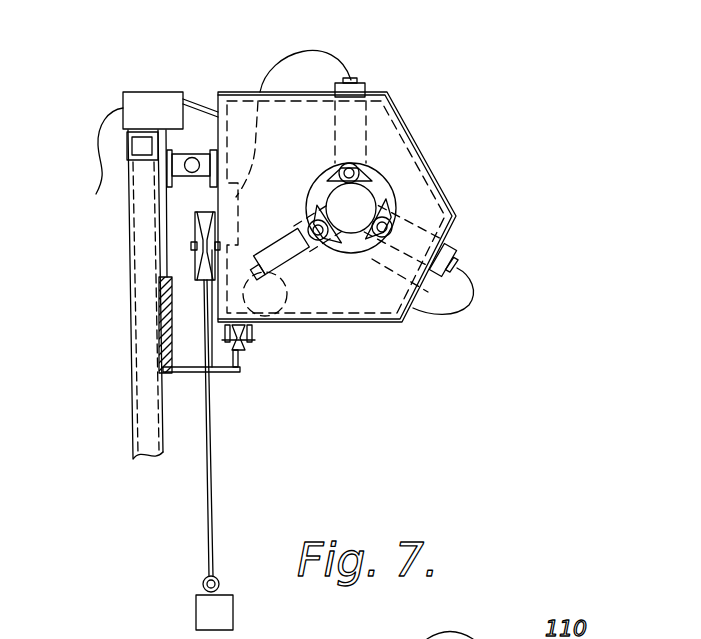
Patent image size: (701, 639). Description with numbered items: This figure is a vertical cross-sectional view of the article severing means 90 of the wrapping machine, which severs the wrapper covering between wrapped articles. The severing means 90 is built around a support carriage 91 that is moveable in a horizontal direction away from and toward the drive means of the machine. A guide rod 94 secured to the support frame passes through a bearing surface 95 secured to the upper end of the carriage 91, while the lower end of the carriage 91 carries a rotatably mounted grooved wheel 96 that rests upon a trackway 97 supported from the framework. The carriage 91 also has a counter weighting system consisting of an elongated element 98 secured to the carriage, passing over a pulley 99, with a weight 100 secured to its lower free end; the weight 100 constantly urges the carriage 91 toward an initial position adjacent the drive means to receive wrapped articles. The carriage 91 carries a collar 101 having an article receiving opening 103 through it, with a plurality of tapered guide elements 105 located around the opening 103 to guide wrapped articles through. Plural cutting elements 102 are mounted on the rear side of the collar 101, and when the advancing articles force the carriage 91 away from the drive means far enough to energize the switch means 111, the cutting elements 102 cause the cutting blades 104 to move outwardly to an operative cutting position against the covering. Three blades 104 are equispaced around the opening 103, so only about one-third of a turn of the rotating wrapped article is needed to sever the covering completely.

The article severing means 90 is at (398, 175).
The support carriage 91 is at (240, 190).
The guide rod 94 is at (184, 169).
The bearing surface 95 is at (198, 154).
The grooved wheel 96 is at (247, 347).
The trackway 97 is at (240, 370).
The elongated element 98 is at (214, 473).
The pulley 99 is at (195, 262).
The weight 100 is at (233, 607).
The collar 101 is at (412, 173).
The cutting elements 102 is at (366, 91).
The article receiving opening 103 is at (379, 186).
The cutting blades 104 is at (337, 175).
The tapered guide elements 105 is at (357, 167).
The switch means 111 is at (143, 102).